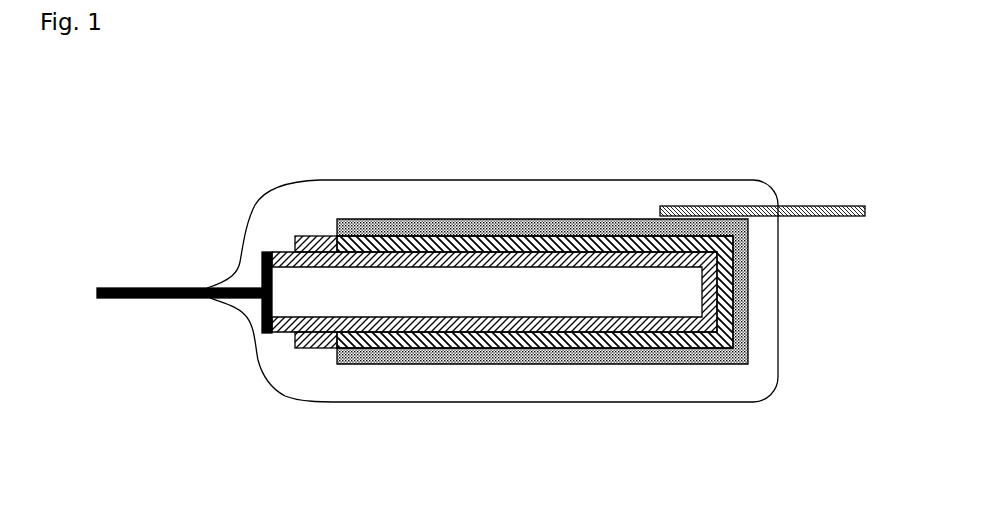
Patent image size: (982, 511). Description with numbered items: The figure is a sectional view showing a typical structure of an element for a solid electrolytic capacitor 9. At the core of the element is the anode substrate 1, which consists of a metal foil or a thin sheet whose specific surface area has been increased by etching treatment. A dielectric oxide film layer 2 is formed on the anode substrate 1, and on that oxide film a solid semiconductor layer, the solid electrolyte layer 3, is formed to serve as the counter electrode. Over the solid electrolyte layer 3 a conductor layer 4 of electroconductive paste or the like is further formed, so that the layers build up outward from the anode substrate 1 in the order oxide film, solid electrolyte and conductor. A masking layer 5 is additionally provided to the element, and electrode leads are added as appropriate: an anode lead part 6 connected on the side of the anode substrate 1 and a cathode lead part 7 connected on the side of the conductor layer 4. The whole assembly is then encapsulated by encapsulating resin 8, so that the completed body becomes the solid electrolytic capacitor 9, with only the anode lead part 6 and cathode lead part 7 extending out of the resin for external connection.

The anode substrate 1 is at (278, 302).
The dielectric oxide film layer 2 is at (398, 265).
The solid electrolyte layer 3 is at (473, 243).
The conductor layer 4 is at (538, 365).
The masking layer 5 is at (315, 236).
The anode lead part 6 is at (122, 288).
The cathode lead part 7 is at (800, 207).
The encapsulating resin 8 is at (692, 383).
The solid electrolytic capacitor 9 is at (650, 163).